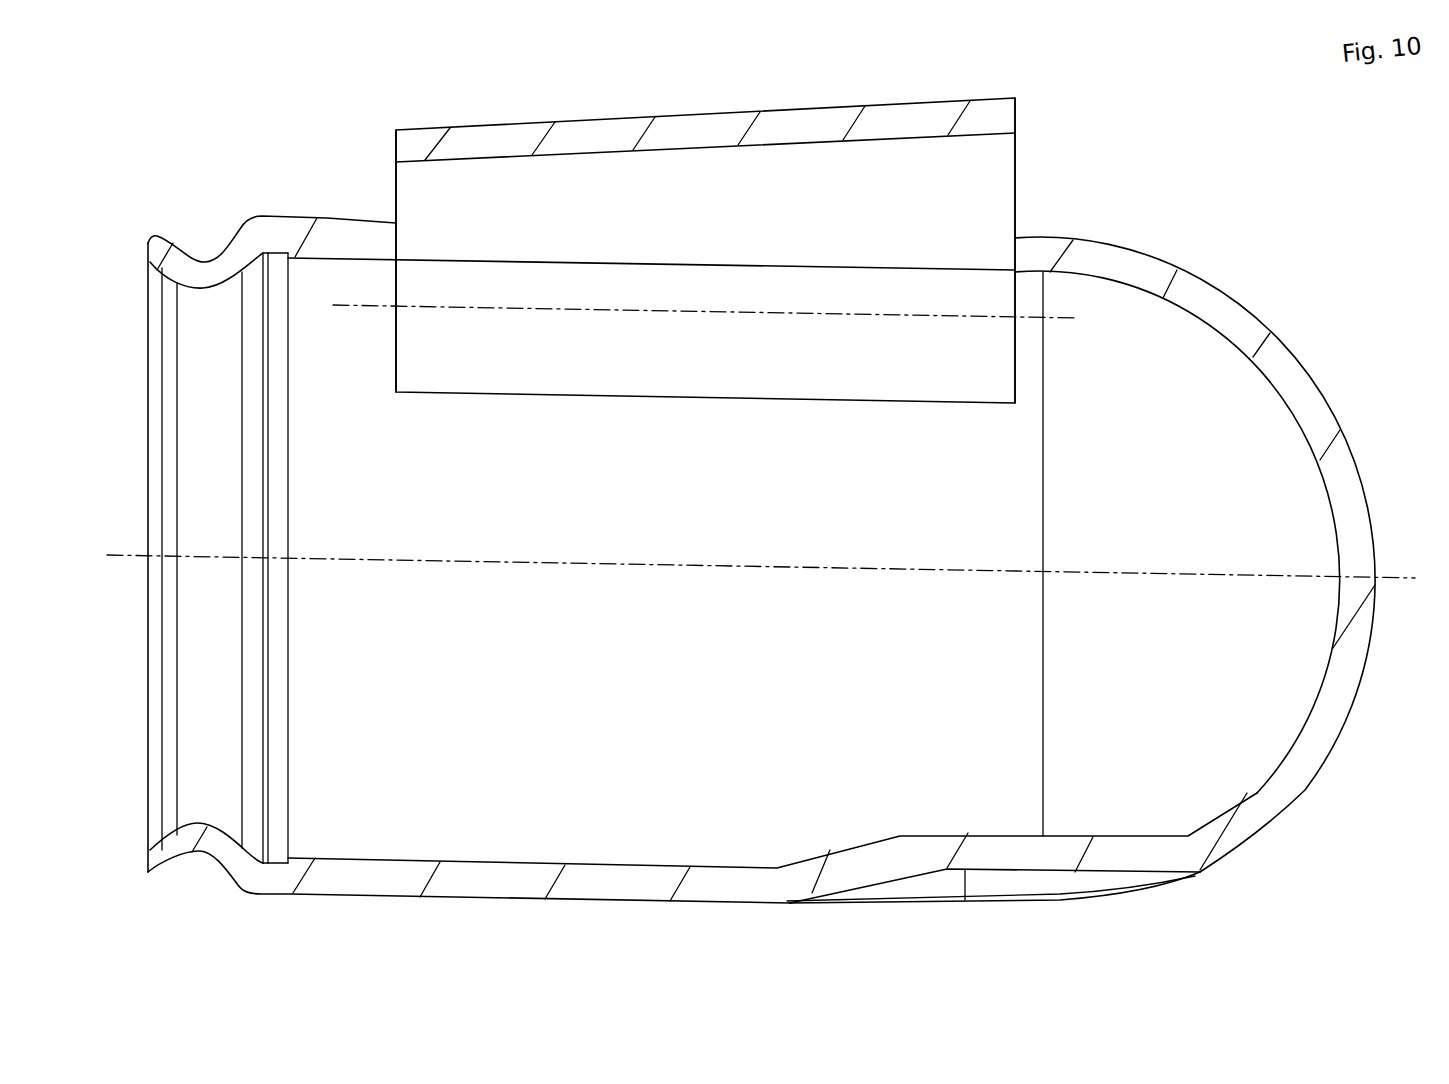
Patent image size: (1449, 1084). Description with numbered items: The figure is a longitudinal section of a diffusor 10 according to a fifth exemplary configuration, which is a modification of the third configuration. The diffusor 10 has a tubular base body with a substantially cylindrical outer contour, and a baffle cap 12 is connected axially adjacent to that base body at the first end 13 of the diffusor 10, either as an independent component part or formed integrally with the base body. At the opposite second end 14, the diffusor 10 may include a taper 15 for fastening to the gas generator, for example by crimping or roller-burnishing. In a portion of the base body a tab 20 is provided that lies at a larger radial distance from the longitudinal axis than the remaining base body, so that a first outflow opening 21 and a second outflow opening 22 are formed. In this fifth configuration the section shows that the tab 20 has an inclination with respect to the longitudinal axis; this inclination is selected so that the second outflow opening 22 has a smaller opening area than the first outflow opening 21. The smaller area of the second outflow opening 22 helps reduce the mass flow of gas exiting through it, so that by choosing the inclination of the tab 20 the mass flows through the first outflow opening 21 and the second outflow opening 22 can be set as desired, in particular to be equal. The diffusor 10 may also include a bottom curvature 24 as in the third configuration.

The diffusor 10 is at (1316, 254).
The baffle cap 12 is at (1348, 453).
The first end 13 is at (1393, 518).
The second end 14 is at (128, 500).
The taper 15 is at (199, 229).
The tab 20 is at (643, 128).
The first outflow opening 21 is at (1018, 170).
The second outflow opening 22 is at (396, 192).
The bottom curvature 24 is at (1043, 865).